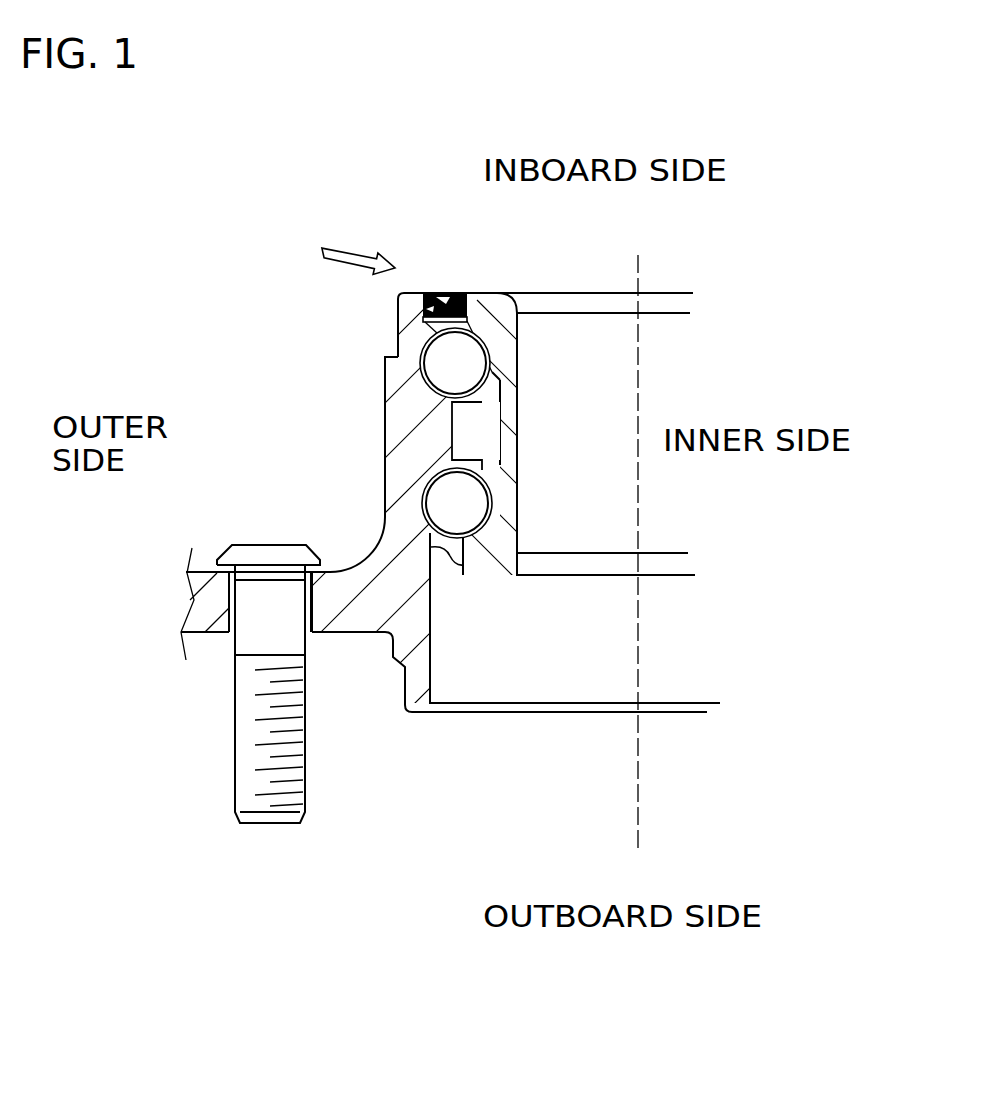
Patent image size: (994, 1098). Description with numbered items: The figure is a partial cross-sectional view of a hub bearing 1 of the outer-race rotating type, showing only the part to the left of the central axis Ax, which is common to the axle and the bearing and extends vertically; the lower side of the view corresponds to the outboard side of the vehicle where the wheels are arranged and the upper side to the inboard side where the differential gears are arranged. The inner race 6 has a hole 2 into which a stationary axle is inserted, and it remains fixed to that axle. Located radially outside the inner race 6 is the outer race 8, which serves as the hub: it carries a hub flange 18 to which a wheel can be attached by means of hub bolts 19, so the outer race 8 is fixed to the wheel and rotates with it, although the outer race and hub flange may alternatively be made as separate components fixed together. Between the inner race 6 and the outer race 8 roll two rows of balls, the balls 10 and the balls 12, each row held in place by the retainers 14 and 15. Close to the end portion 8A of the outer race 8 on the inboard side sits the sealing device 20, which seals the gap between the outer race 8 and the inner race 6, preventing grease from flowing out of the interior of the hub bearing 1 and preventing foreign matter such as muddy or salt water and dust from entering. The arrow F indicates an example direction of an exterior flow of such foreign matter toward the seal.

The hub bearing 1 is at (322, 202).
The hole 2 is at (519, 520).
The inner race 6 is at (507, 356).
The outer race 8 is at (386, 418).
The end portion of the outer race 8A is at (398, 312).
The balls 10 is at (384, 473).
The balls 12 is at (440, 365).
The retainer 14 is at (482, 465).
The retainer 15 is at (482, 405).
The hub flange 18 is at (325, 636).
The hub bolt 19 is at (233, 728).
The sealing device 20 is at (437, 293).
The central axis Ax is at (640, 635).
The arrow F is at (350, 255).